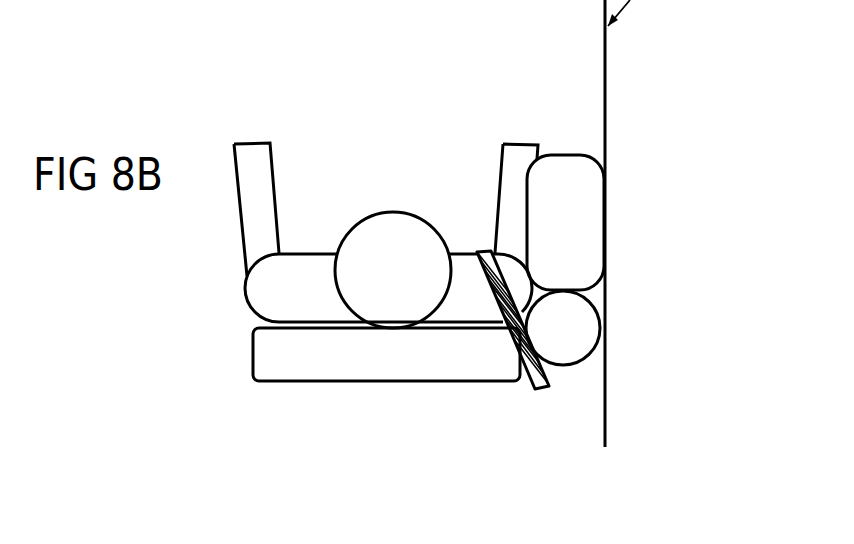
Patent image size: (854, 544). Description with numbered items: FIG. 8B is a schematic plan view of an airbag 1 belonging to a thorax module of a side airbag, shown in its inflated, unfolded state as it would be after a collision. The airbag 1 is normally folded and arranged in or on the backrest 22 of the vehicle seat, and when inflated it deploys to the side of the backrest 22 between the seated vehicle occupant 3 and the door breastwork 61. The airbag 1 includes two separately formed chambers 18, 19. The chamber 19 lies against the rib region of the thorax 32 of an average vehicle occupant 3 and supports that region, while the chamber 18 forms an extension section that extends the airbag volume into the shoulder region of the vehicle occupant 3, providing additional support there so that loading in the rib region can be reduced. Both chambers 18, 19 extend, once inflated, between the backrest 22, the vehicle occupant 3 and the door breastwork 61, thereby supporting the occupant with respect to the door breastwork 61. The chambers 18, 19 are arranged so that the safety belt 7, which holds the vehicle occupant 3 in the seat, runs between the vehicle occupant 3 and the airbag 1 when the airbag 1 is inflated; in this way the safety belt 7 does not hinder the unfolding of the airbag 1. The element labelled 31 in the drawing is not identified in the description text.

The airbag 1 is at (560, 392).
The vehicle occupant 3 is at (302, 234).
The safety belt 7 is at (537, 387).
The chamber 18 is at (588, 329).
The chamber 19 is at (593, 237).
The backrest 22 is at (381, 360).
The roller 31 is at (375, 233).
The thorax 32 is at (262, 301).
The door breastwork 61 is at (607, 158).